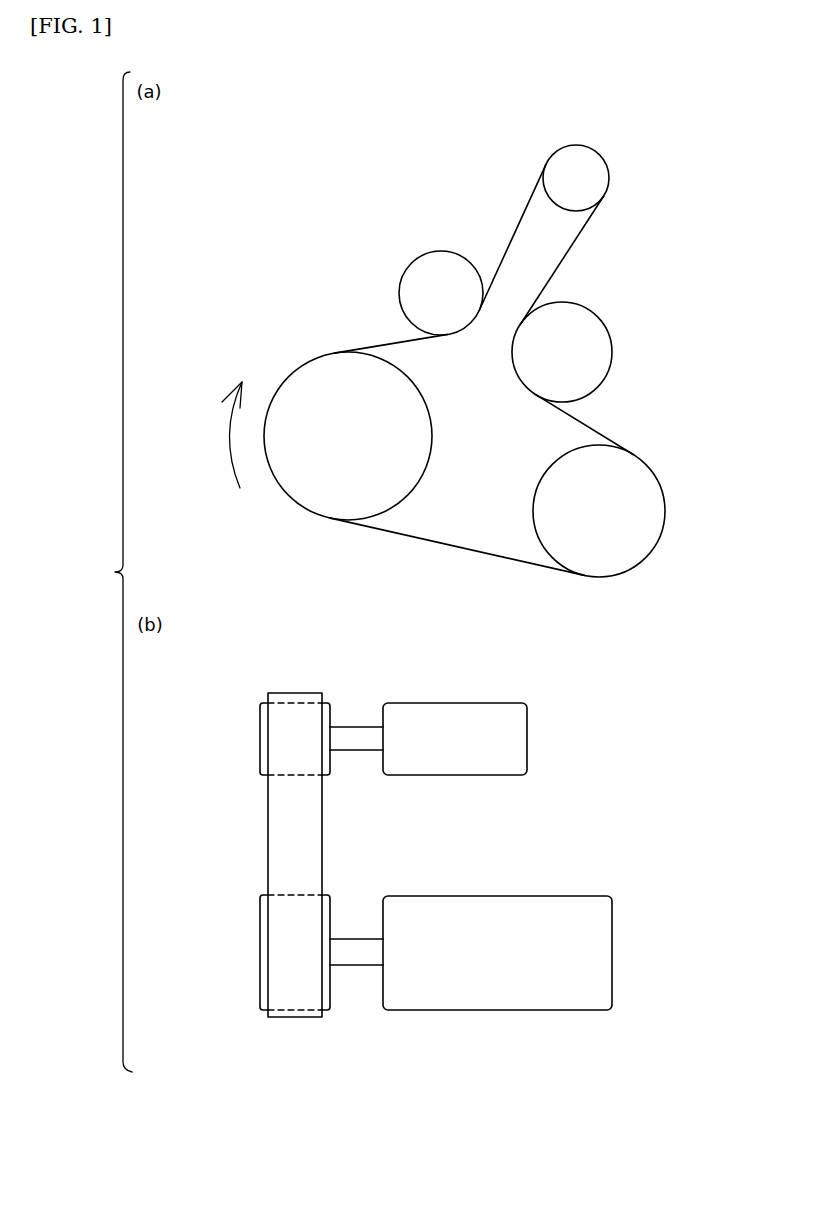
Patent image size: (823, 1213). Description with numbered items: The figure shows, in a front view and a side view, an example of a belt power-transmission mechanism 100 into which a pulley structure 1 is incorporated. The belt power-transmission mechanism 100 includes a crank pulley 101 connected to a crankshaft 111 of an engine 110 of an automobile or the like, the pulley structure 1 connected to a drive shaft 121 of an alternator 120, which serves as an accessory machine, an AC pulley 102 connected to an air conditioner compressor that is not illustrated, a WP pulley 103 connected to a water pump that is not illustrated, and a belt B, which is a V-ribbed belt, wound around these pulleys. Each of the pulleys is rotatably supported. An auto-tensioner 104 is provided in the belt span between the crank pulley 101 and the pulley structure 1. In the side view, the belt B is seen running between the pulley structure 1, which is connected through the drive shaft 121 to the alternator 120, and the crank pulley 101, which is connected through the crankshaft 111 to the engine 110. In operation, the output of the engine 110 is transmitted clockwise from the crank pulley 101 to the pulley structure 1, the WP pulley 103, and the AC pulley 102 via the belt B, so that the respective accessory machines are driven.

The pulley structure 1 is at (550, 167).
The belt power-transmission mechanism 100 is at (676, 180).
The belt B is at (566, 258).
The crank pulley 101 is at (312, 500).
The AC pulley 102 is at (665, 510).
The WP pulley 103 is at (611, 352).
The auto-tensioner 104 is at (398, 292).
The engine 110 is at (497, 905).
The crankshaft 111 is at (354, 938).
The alternator 120 is at (457, 712).
The drive shaft 121 is at (355, 728).